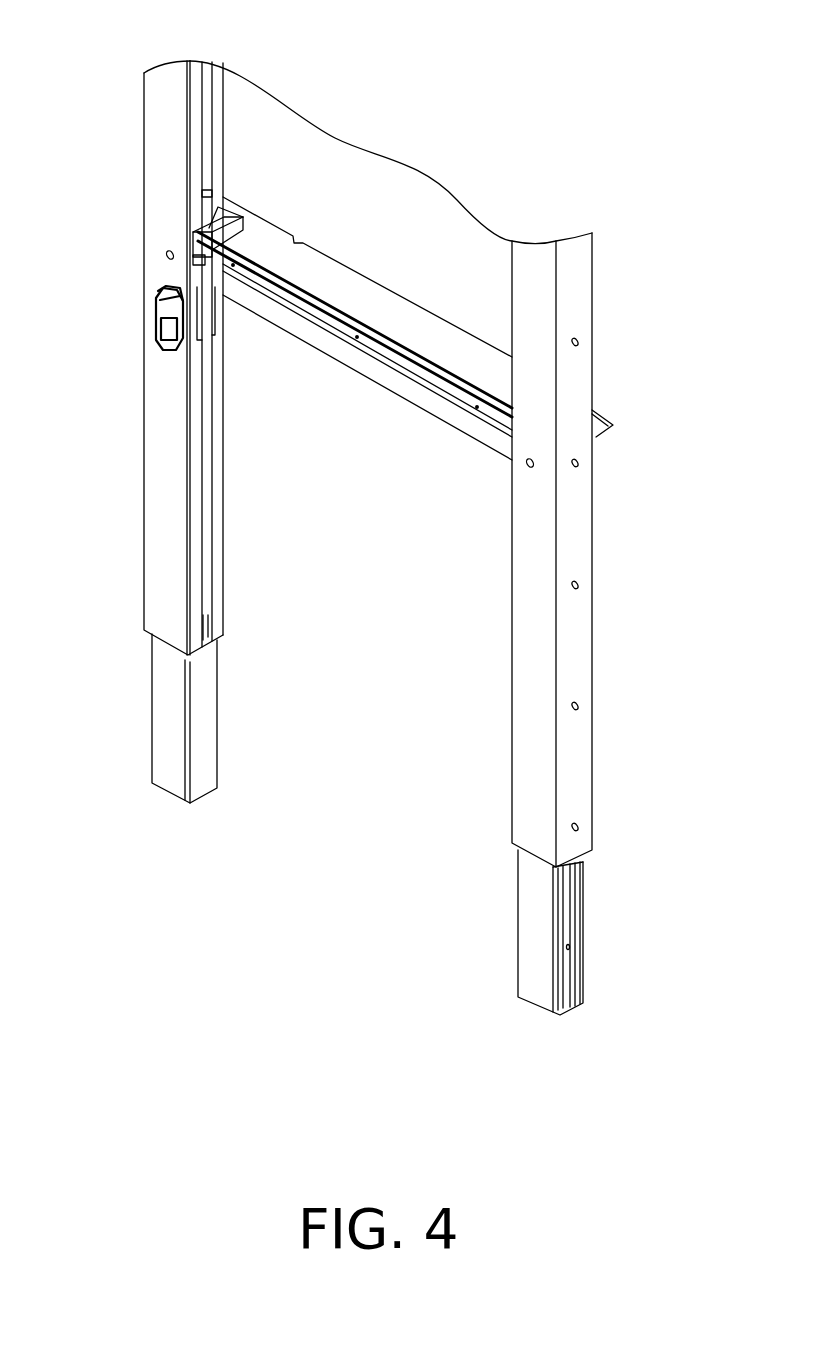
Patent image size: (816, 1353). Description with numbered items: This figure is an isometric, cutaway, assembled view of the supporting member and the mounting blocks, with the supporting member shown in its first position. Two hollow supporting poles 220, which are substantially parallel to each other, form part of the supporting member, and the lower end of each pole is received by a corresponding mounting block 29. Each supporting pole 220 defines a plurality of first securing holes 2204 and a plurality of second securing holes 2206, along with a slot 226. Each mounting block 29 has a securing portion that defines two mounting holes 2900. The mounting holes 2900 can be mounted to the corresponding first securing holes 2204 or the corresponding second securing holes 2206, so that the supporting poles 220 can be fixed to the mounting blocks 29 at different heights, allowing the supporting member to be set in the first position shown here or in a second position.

The supporting pole 220 is at (587, 528).
The second securing hole 2206 is at (579, 706).
The first securing hole 2204 is at (579, 826).
The mounting hole 2900 is at (570, 948).
The mounting block 29 is at (163, 721).
The slot 226 is at (204, 636).